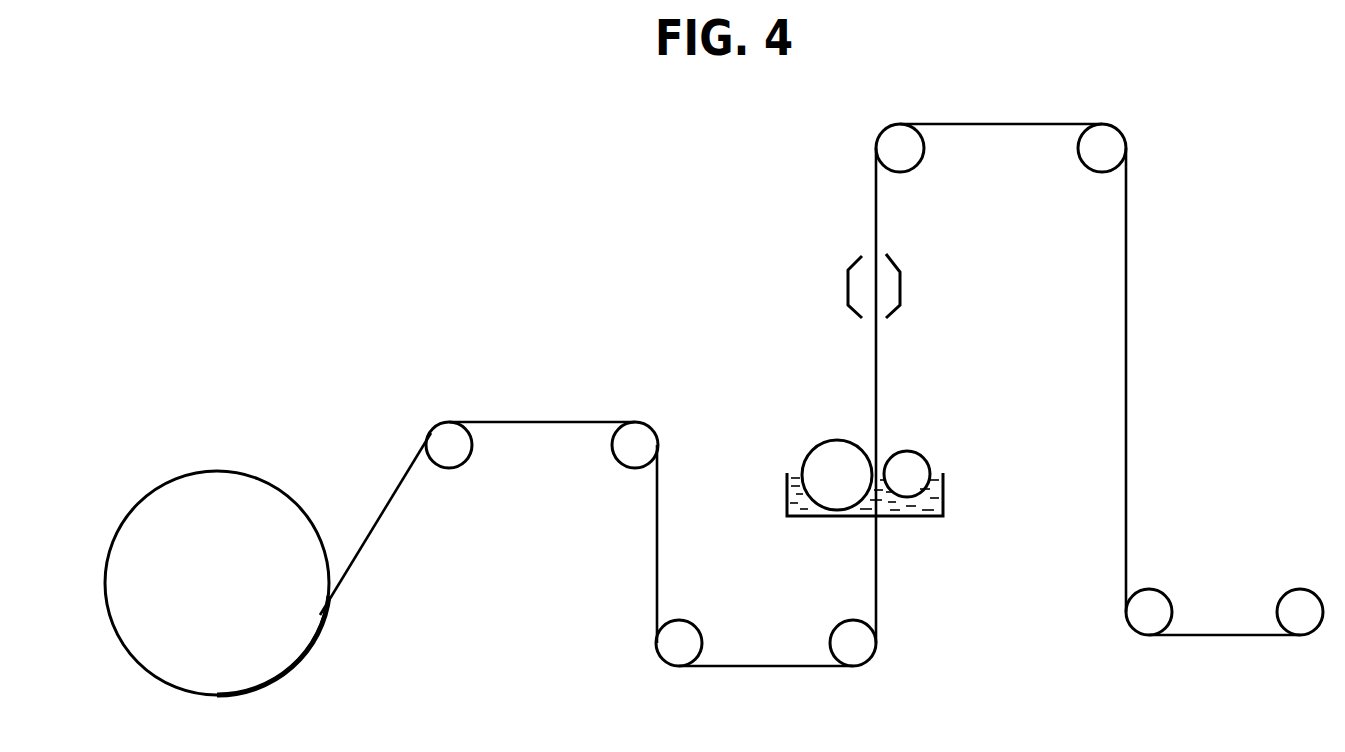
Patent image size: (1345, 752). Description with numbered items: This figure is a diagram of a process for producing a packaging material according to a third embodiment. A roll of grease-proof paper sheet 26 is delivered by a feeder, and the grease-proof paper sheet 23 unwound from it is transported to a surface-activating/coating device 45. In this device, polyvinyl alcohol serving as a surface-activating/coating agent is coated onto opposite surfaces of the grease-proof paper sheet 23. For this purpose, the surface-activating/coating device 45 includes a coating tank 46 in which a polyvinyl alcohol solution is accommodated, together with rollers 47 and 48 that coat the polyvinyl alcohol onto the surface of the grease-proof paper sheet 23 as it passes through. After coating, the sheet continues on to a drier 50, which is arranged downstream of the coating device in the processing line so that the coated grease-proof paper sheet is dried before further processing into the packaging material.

The roll of grease-proof paper sheet 26 is at (237, 470).
The grease-proof paper sheet 23 is at (548, 418).
The surface-activating/coating device 45 is at (837, 477).
The coating tank 46 is at (918, 518).
The roller 47 is at (835, 440).
The roller 48 is at (923, 457).
The drier 50 is at (900, 285).